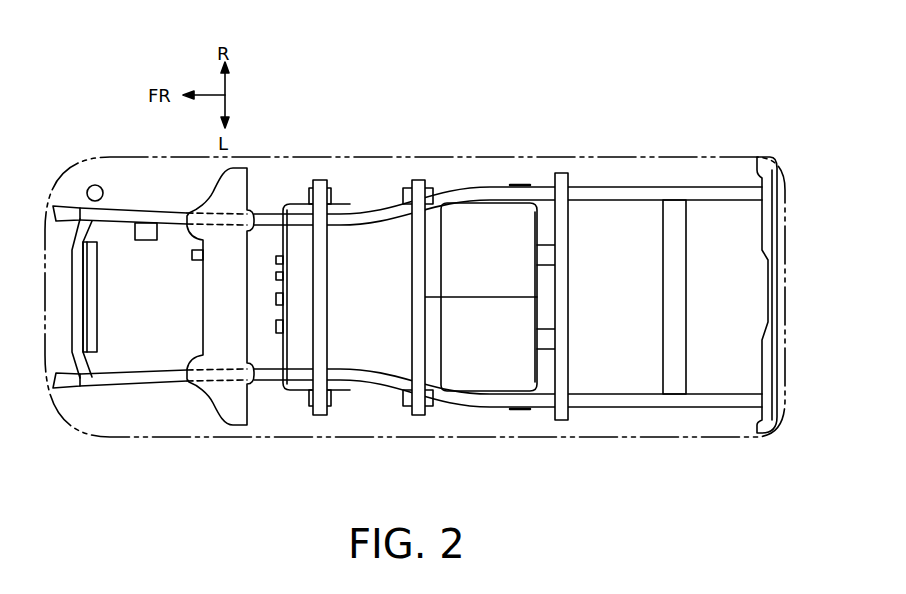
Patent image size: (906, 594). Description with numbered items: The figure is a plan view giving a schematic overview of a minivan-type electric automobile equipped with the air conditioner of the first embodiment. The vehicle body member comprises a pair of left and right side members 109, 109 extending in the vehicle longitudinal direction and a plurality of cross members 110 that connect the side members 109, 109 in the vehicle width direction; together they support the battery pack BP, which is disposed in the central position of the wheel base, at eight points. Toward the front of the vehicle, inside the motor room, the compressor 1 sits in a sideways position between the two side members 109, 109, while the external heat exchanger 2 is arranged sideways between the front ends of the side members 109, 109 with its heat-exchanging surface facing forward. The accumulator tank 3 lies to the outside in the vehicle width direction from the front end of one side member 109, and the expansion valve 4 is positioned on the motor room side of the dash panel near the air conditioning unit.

The compressor 1 is at (147, 241).
The external heat exchanger 2 is at (98, 330).
The accumulator tank 3 is at (103, 189).
The expansion valve 4 is at (192, 255).
The side members 109 is at (600, 187).
The cross members 110 is at (203, 305).
The battery pack BP is at (353, 203).